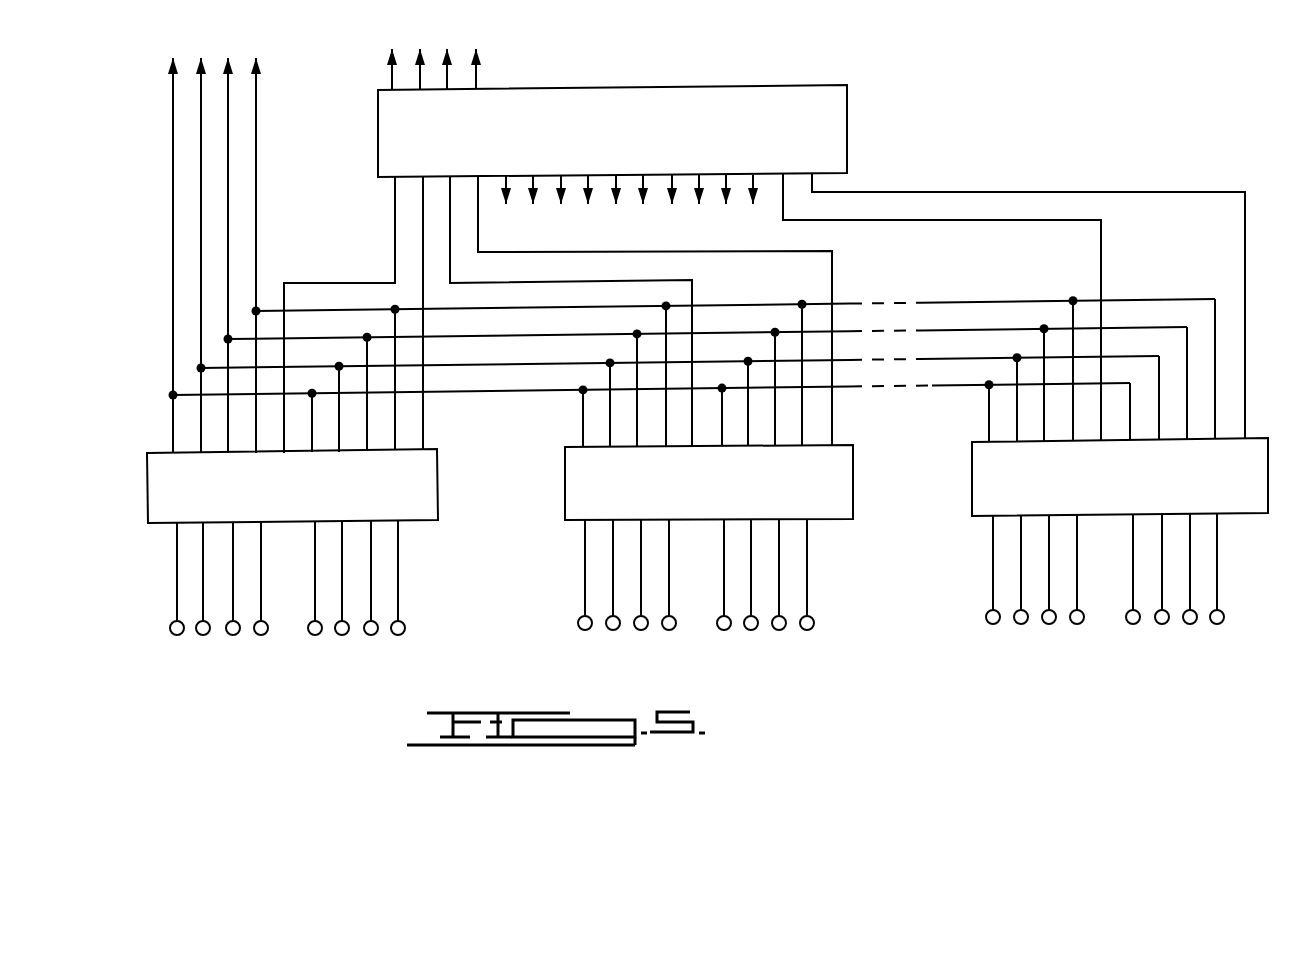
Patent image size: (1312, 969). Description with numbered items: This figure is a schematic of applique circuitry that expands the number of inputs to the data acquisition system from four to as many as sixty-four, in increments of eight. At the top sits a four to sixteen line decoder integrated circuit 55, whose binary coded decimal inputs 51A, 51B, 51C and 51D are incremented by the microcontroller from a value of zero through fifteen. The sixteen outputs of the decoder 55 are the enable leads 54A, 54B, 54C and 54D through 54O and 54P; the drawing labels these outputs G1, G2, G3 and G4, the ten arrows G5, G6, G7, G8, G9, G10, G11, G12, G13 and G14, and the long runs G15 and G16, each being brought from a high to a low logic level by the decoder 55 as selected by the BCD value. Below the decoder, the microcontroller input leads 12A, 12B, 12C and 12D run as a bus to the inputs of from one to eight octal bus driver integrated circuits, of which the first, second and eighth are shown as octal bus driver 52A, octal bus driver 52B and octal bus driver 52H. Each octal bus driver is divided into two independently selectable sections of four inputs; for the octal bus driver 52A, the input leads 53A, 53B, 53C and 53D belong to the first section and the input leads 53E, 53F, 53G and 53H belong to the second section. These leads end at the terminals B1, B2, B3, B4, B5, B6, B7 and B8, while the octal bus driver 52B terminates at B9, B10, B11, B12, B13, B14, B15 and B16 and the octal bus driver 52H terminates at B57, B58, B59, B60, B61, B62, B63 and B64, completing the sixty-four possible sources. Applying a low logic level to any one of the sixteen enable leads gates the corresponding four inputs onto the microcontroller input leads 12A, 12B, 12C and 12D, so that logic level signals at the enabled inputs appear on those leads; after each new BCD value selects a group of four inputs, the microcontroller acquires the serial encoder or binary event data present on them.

The four to sixteen line decoder integrated circuit 55 is at (818, 88).
The microcontroller input lead 12A is at (173, 73).
The microcontroller input lead 12B is at (201, 68).
The microcontroller input lead 12C is at (228, 68).
The microcontroller input lead 12D is at (256, 68).
The BCD input 51A is at (392, 72).
The BCD input 51B is at (420, 70).
The BCD input 51C is at (447, 72).
The BCD input 51D is at (476, 72).
The enable lead 54A is at (395, 200).
The enable lead 54B is at (423, 217).
The enable lead 54C is at (450, 228).
The enable lead 54D is at (838, 258).
The enable lead 54O is at (1101, 258).
The enable lead 54P is at (1245, 233).
The octal bus driver integrated circuit 52A is at (470, 437).
The octal bus driver integrated circuit 52B is at (878, 436).
The octal bus driver integrated circuit 52H is at (1263, 438).
The input lead 53A is at (177, 545).
The input lead 53B is at (203, 556).
The input lead 53C is at (233, 568).
The input lead 53D is at (282, 554).
The input lead 53E is at (315, 580).
The input lead 53F is at (342, 548).
The input lead 53G is at (373, 562).
The input lead 53H is at (400, 582).
The gate signal G1 is at (314, 270).
The gate signal bus G2 is at (692, 369).
The gate signal G3 is at (613, 267).
The gate signal G4 is at (800, 234).
The gate signal G5 is at (500, 203).
The gate signal G6 is at (531, 190).
The gate signal G7 is at (558, 203).
The gate signal G8 is at (586, 190).
The gate signal G9 is at (613, 203).
The gate signal G10 is at (641, 190).
The gate signal G11 is at (674, 203).
The gate signal G12 is at (697, 190).
The gate signal G13 is at (727, 203).
The gate signal G14 is at (751, 190).
The gate signal G15 is at (944, 209).
The gate signal G16 is at (1046, 177).
The bus output terminal B1 is at (177, 636).
The bus output terminal B2 is at (203, 636).
The bus output terminal B3 is at (233, 636).
The bus output terminal B4 is at (261, 636).
The bus output terminal B5 is at (315, 636).
The bus output terminal B6 is at (342, 636).
The bus output terminal B7 is at (371, 636).
The bus output terminal B8 is at (406, 627).
The bus output terminal B9 is at (585, 630).
The bus output terminal B10 is at (613, 630).
The bus output terminal B11 is at (641, 630).
The bus output terminal B12 is at (669, 630).
The bus output terminal B13 is at (724, 630).
The bus output terminal B14 is at (751, 630).
The bus output terminal B15 is at (779, 630).
The bus output terminal B16 is at (815, 622).
The bus output terminal B57 is at (993, 624).
The bus output terminal B58 is at (1021, 624).
The bus output terminal B59 is at (1049, 624).
The bus output terminal B60 is at (1099, 626).
The bus output terminal B61 is at (1133, 624).
The bus output terminal B62 is at (1162, 624).
The bus output terminal B63 is at (1190, 624).
The bus output terminal B64 is at (1225, 616).